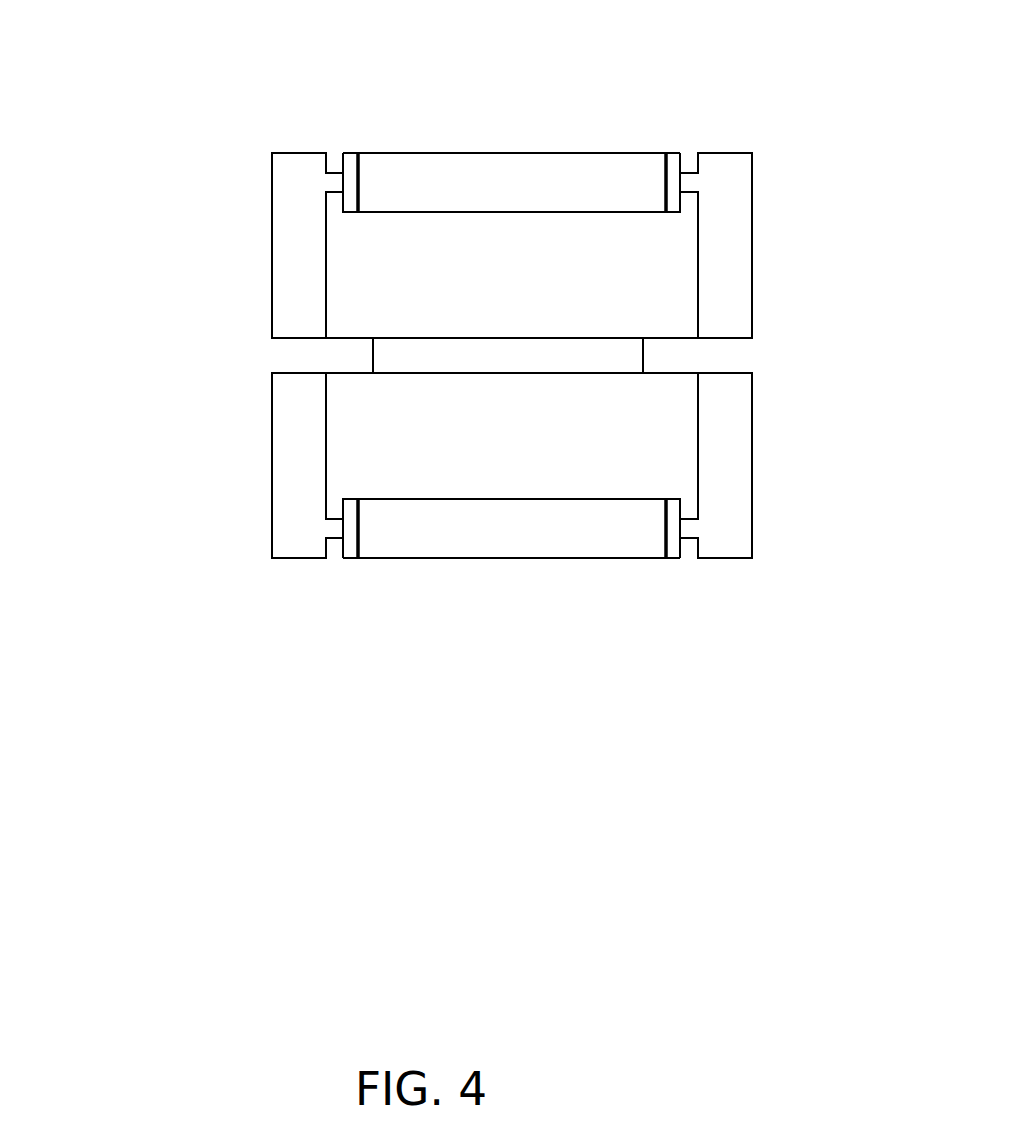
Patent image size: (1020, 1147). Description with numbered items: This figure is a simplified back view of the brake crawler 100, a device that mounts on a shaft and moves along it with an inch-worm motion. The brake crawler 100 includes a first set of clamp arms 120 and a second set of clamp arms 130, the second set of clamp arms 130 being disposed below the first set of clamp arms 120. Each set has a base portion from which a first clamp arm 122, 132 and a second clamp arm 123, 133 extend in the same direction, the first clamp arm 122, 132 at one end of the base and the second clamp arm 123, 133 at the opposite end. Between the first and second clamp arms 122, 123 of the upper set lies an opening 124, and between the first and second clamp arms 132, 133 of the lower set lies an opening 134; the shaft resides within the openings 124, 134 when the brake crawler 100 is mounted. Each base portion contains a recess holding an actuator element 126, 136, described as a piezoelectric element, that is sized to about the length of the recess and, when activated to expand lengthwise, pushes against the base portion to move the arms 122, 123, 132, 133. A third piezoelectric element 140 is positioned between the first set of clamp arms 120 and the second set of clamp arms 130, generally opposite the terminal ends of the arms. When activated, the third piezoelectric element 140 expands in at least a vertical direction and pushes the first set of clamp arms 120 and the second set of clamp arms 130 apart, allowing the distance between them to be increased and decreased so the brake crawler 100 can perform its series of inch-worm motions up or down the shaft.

The brake crawler 100 is at (156, 123).
The first set of clamp arms 120 is at (228, 150).
The first clamp arm 122 is at (285, 177).
The second clamp arm 123 is at (731, 233).
The opening 124 is at (590, 262).
The actuator element (piezoelectric element) 126 is at (510, 180).
The second set of clamp arms 130 is at (247, 383).
The first clamp arm 132 is at (315, 528).
The second clamp arm 133 is at (752, 513).
The opening 134 is at (620, 465).
The actuator element (piezoelectric element) 136 is at (467, 508).
The third piezoelectric element 140 is at (667, 349).